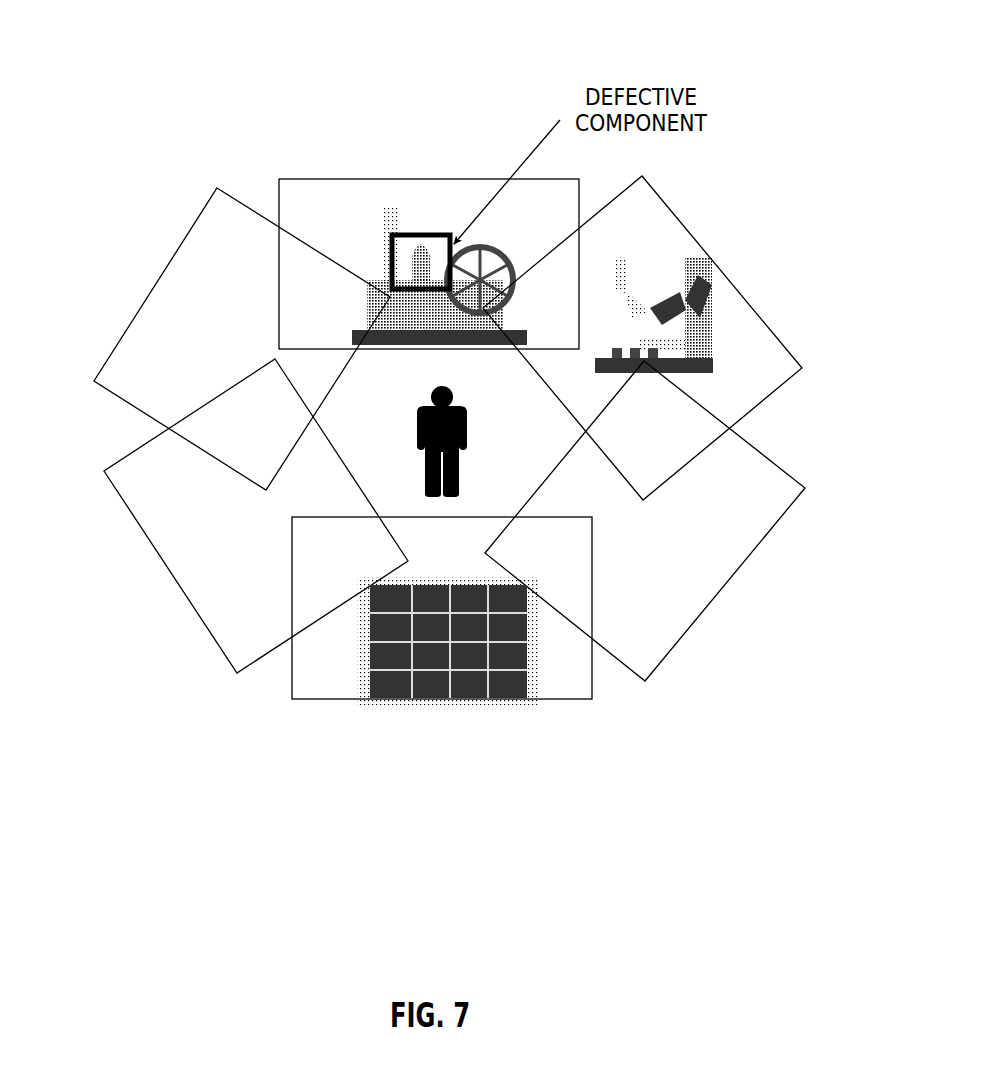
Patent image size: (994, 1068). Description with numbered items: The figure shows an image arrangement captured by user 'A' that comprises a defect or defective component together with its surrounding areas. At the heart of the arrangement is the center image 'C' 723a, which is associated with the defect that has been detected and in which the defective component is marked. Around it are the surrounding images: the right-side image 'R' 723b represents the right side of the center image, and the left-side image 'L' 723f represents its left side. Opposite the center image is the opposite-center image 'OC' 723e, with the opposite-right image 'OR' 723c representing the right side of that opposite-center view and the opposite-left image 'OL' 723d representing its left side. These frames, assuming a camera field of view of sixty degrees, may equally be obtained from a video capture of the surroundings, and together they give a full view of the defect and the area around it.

The center image 'C' 723a is at (437, 177).
The right-side image 'R' 723b is at (684, 221).
The opposite-right image 'OR' 723c is at (788, 471).
The opposite-left image 'OL' 723d is at (436, 707).
The opposite-center image 'OC' 723e is at (173, 587).
The left-side image 'L' 723f is at (105, 394).